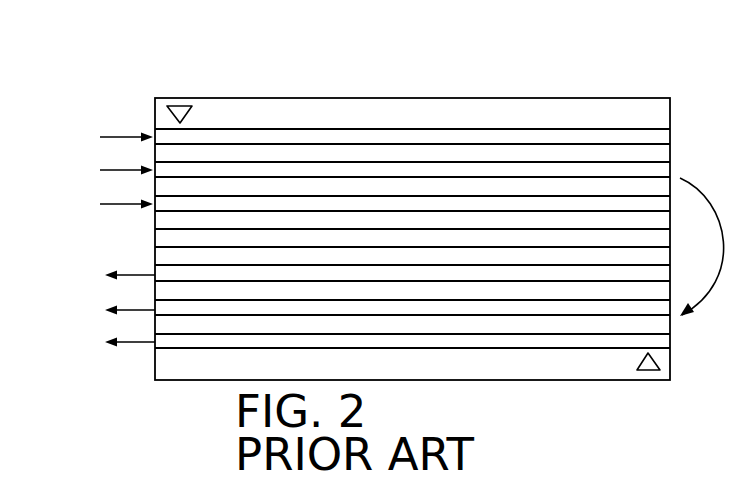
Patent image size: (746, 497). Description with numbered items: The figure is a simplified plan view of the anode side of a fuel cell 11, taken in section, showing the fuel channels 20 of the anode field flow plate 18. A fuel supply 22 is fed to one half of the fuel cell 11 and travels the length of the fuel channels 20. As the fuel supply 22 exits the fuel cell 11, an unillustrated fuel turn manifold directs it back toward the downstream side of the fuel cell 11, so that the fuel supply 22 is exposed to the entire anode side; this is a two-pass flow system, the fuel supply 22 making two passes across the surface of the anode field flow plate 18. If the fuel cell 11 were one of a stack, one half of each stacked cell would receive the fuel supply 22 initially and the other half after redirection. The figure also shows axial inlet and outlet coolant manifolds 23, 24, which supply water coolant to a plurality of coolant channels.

The fuel cell 11 is at (119, 73).
The anode field flow plate 18 is at (583, 113).
The fuel channels 20 is at (378, 135).
The fuel supply 22 is at (135, 137).
The inlet coolant manifold 23 is at (180, 112).
The outlet coolant manifold 24 is at (648, 362).